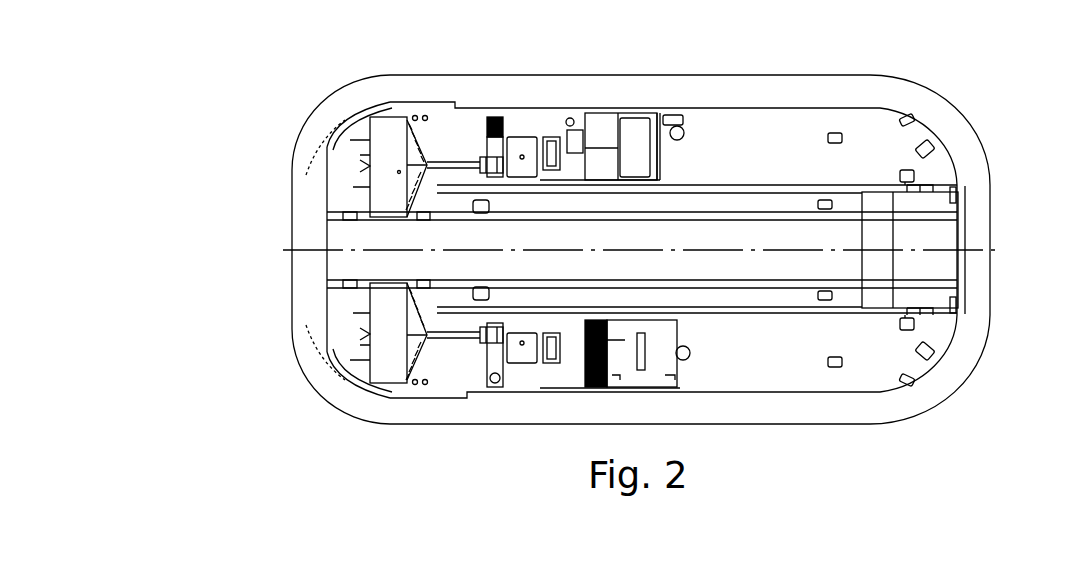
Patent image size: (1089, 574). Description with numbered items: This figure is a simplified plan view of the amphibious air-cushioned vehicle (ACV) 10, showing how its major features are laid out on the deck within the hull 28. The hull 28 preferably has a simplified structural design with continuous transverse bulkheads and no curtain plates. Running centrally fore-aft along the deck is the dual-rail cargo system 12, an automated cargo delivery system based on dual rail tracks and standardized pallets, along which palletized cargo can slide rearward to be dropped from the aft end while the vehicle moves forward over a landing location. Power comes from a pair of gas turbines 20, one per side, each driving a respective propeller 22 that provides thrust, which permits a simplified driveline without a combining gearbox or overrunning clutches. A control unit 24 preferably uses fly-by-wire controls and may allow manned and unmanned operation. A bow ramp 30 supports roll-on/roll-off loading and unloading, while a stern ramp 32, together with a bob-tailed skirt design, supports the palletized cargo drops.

The amphibious air-cushioned vehicle (ACV) 10 is at (232, 128).
The dual-rail cargo system 12 is at (790, 226).
The gas turbine 20 is at (523, 143).
The propeller 22 is at (385, 143).
The control unit 24 is at (727, 128).
The hull 28 is at (300, 322).
The bow ramp 30 is at (947, 275).
The stern ramp 32 is at (352, 240).